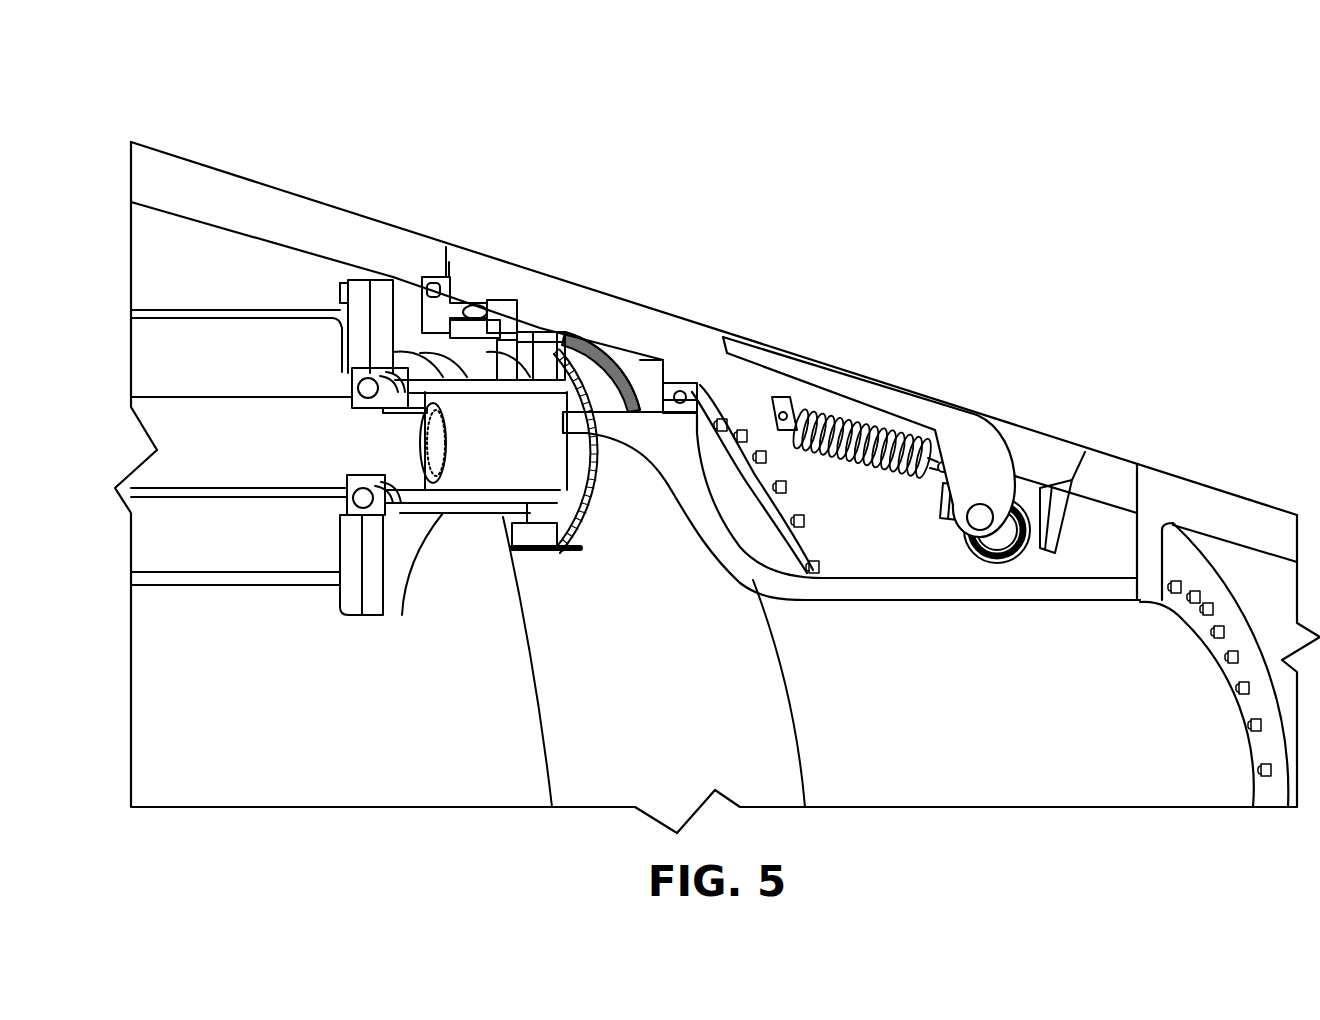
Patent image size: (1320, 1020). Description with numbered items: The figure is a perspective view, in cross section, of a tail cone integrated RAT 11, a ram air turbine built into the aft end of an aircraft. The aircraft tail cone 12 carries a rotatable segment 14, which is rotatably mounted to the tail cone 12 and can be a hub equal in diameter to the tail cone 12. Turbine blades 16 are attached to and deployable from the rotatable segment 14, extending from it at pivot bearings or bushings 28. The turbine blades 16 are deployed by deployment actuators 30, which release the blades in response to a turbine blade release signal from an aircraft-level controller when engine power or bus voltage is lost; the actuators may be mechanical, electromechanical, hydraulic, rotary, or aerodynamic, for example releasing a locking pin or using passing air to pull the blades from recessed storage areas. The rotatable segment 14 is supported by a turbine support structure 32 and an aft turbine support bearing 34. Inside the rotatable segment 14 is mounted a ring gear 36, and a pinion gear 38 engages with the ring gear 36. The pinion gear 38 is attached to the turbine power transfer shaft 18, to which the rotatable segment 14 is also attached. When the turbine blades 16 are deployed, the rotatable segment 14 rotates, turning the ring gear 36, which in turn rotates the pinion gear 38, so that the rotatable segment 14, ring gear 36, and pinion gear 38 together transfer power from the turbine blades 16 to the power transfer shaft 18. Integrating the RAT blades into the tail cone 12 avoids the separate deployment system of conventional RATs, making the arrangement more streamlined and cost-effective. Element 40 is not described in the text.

The tail cone integrated RAT 11 is at (833, 185).
The aircraft tail cone 12 is at (313, 203).
The rotatable segment 14 is at (575, 312).
The turbine blades 16 is at (880, 388).
The turbine power transfer shaft 18 is at (243, 470).
The pivot bearings or bushings 28 is at (1008, 552).
The deployment actuators 30 is at (855, 468).
The turbine support structure 32 is at (727, 553).
The aft turbine support bearing 34 is at (683, 398).
The ring gear 36 is at (617, 367).
The pinion gear 38 is at (556, 555).
The seal clamp 40 is at (462, 316).